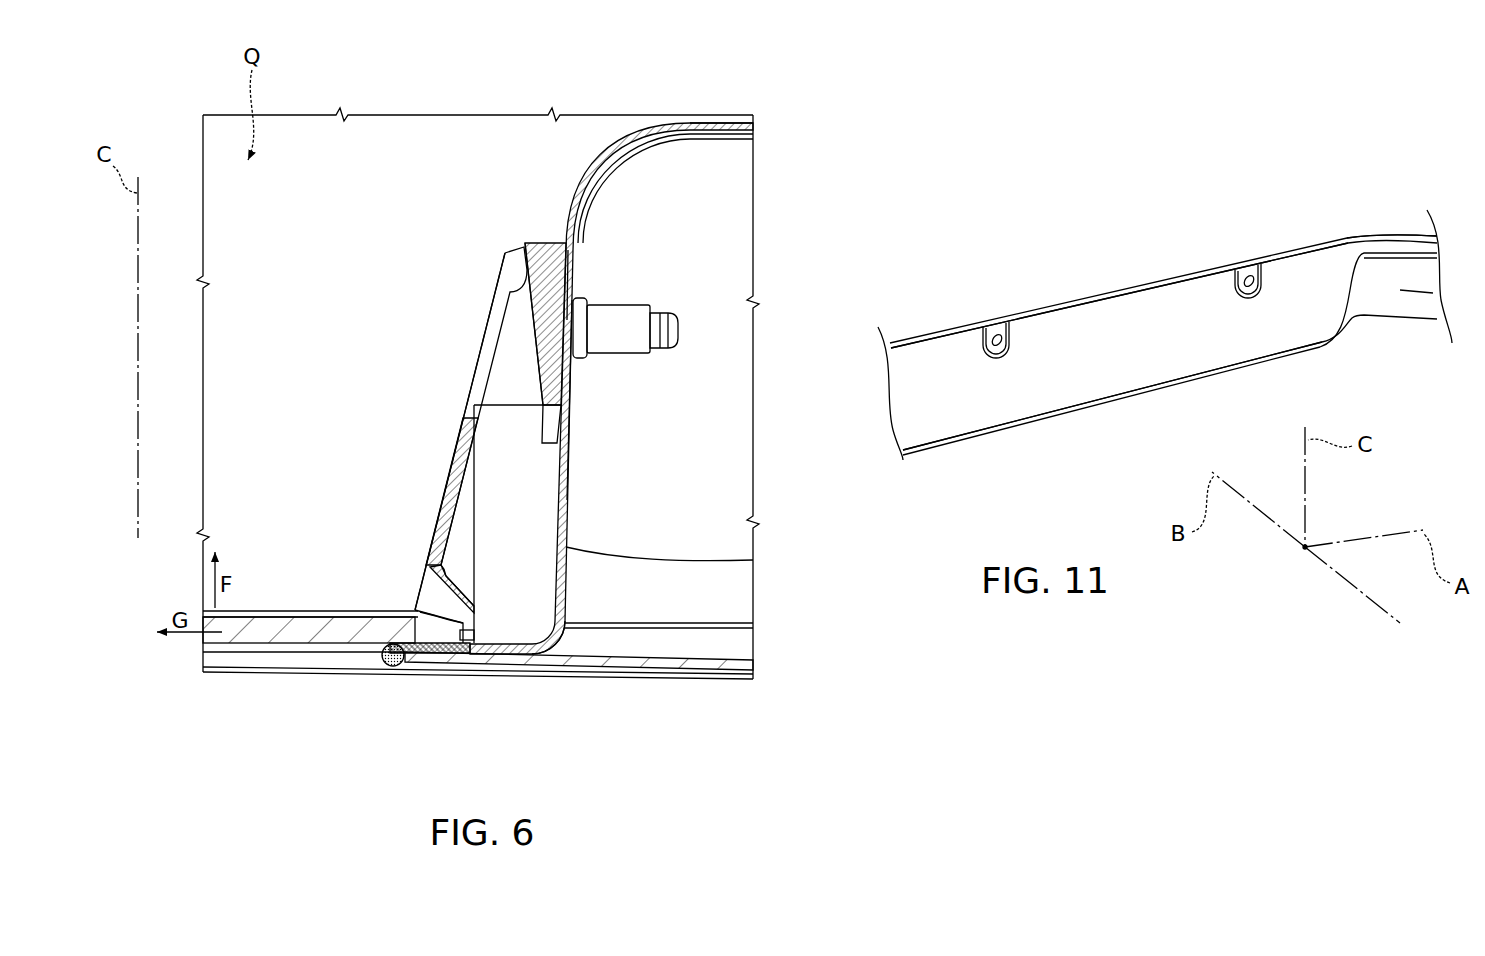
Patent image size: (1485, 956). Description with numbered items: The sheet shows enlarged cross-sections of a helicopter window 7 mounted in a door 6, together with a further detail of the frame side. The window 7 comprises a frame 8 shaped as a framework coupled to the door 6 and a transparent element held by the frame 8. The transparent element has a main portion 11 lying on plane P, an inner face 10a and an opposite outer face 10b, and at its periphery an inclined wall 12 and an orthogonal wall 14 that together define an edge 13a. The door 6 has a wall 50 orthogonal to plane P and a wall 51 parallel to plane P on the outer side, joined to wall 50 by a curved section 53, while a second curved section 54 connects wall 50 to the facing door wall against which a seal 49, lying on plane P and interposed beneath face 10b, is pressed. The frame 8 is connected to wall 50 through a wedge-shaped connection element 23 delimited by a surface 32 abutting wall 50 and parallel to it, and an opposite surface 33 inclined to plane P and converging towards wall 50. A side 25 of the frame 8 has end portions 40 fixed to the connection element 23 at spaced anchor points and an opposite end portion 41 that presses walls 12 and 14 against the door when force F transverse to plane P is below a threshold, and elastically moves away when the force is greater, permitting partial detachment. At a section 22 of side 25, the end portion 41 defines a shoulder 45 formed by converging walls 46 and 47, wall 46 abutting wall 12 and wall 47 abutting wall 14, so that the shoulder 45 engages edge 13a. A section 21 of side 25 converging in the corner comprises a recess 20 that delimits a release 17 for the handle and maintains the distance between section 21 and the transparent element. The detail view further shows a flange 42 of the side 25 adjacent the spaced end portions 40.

In FIG. 6, the door 6 is at (769, 99).
In FIG. 6, the window 7 is at (311, 198).
In FIG. 6, the frame 8 is at (629, 289).
In FIG. 6, the face 10a is at (297, 604).
In FIG. 6, the face 10b is at (277, 651).
In FIG. 6, the main portion 11 is at (247, 607).
In FIG. 6, the wall 12 is at (451, 606).
In FIG. 6, the edge 13a is at (455, 641).
In FIG. 6, the wall 14 is at (480, 637).
In FIG. 11, the release 17 is at (1397, 262).
In FIG. 6, the recess 20 is at (447, 529).
In FIG. 11, the recess 20 is at (1352, 331).
In FIG. 6, the section 21 is at (563, 511).
In FIG. 11, the section 21 is at (1405, 221).
In FIG. 11, the section 22 is at (1107, 271).
In FIG. 6, the connection element 23 is at (532, 237).
In FIG. 6, the side 25 is at (475, 504).
In FIG. 11, the side 25 is at (1187, 398).
In FIG. 6, the surface 32 is at (575, 282).
In FIG. 6, the surface 33 is at (524, 314).
In FIG. 6, the end portion 40 is at (516, 266).
In FIG. 11, the end portion 40 is at (1000, 328).
In FIG. 6, the end portion 41 is at (480, 597).
In FIG. 11, the end portion 41 is at (1020, 403).
In FIG. 11, the flange 42 is at (931, 370).
In FIG. 6, the shoulder 45 is at (428, 636).
In FIG. 6, the wall 46 is at (441, 639).
In FIG. 6, the wall 47 is at (481, 620).
In FIG. 6, the seal 49 is at (392, 648).
In FIG. 6, the wall 50 is at (576, 394).
In FIG. 6, the wall 51 is at (707, 122).
In FIG. 6, the curved section 53 is at (621, 171).
In FIG. 6, the curved section 54 is at (562, 646).